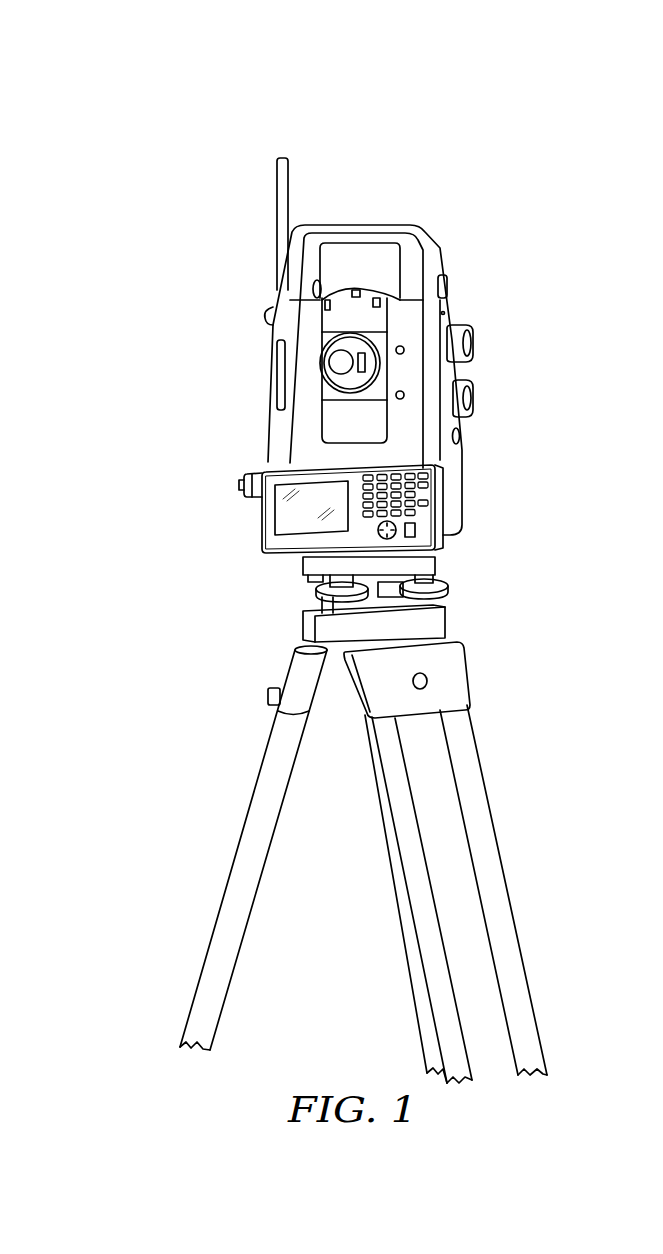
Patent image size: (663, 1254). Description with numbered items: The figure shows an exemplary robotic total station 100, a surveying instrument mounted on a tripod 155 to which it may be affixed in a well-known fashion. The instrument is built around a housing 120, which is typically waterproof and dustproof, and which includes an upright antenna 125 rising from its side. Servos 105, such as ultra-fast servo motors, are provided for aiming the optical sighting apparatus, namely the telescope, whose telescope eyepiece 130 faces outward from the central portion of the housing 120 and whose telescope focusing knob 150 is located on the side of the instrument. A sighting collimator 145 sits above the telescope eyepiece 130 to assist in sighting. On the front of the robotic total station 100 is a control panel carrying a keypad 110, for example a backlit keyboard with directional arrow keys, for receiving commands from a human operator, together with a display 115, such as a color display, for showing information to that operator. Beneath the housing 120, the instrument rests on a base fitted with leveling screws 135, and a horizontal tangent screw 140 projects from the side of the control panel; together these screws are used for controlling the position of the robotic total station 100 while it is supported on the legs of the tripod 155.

The robotic total station 100 is at (125, 137).
The servos 105 is at (477, 325).
The keypad 110 is at (423, 487).
The display 115 is at (294, 519).
The housing 120 is at (272, 429).
The antenna 125 is at (276, 163).
The telescope eyepiece 130 is at (320, 363).
The leveling screws 135 is at (440, 583).
The horizontal tangent screw 140 is at (240, 484).
The sighting collimator 145 is at (313, 289).
The telescope focusing knob 150 is at (378, 370).
The tripod 155 is at (470, 757).